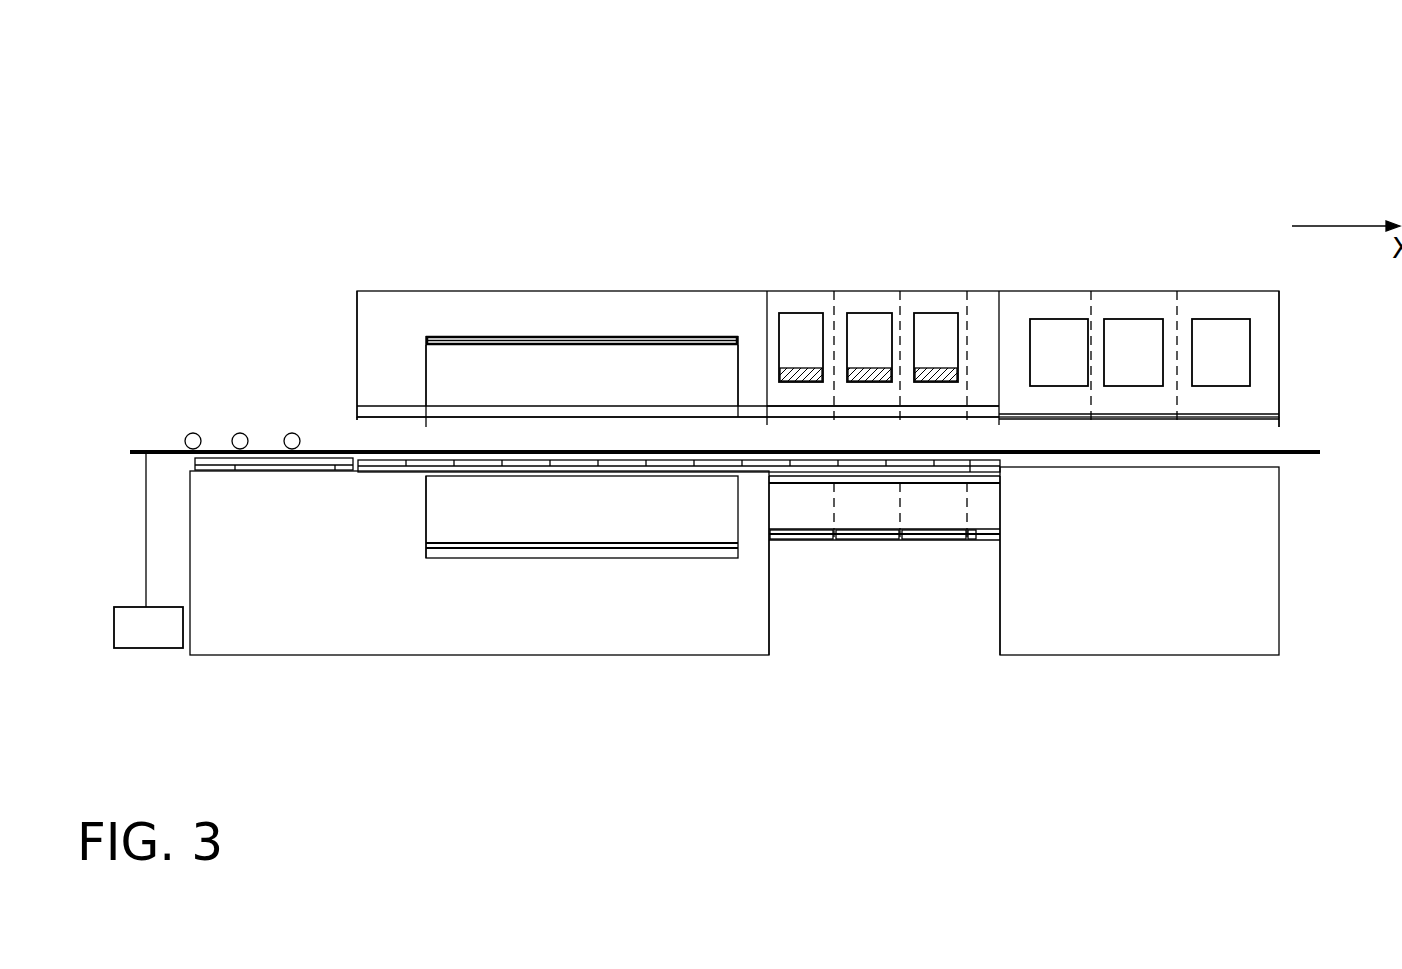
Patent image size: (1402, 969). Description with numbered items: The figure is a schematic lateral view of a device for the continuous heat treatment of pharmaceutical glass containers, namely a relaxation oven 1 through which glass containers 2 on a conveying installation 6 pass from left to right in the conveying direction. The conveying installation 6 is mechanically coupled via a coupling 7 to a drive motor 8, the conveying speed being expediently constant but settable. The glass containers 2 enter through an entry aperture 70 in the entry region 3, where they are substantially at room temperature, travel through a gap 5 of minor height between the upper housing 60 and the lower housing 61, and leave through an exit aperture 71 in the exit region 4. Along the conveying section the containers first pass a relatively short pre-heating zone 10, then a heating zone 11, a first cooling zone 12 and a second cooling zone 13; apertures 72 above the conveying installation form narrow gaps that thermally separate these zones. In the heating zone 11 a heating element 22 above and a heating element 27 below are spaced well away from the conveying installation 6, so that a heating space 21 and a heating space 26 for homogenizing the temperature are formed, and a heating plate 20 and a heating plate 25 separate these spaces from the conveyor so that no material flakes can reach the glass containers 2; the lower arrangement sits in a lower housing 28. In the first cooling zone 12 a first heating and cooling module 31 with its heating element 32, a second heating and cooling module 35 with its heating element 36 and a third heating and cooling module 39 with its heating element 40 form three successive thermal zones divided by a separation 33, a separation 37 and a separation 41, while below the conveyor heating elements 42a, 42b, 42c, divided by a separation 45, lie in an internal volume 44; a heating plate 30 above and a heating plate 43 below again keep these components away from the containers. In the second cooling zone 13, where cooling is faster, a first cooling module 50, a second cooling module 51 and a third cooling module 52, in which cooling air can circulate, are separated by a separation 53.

The relaxation oven 1 is at (256, 111).
The glass container 2 is at (193, 432).
The entry region 3 is at (345, 437).
The exit region 4 is at (1290, 437).
The gap 5 is at (605, 430).
The conveying installation 6 is at (140, 451).
The coupling 7 is at (145, 536).
The drive motor 8 is at (113, 628).
The pre-heating zone 10 is at (393, 408).
The heating zone 11 is at (619, 175).
The first cooling zone 12 is at (901, 266).
The second cooling zone 13 is at (1139, 265).
The heating plate 20 is at (582, 326).
The heating space 21 is at (492, 366).
The heating element 22 is at (444, 338).
The heating plate 25 is at (690, 478).
The heating space 26 is at (582, 592).
The heating element 27 is at (563, 553).
The lower housing 28 is at (426, 508).
The heating plate 30 is at (984, 415).
The first heating and cooling module 31 is at (801, 280).
The heating element 32 is at (802, 372).
The separation 33 is at (834, 302).
The second heating and cooling module 35 is at (879, 283).
The heating element 36 is at (885, 372).
The separation 37 is at (897, 302).
The third heating and cooling module 39 is at (949, 274).
The heating element 40 is at (950, 372).
The separation 41 is at (967, 302).
The heating element 42a is at (808, 540).
The heating element 42b is at (862, 540).
The heating element 42c is at (947, 540).
The heating plate 43 is at (910, 470).
The internal volume 44 is at (786, 522).
The separation 45 is at (830, 488).
The first cooling module 50 is at (1068, 335).
The second cooling module 51 is at (1148, 335).
The third cooling module 52 is at (1235, 335).
The separation 53 is at (1091, 310).
The housing 60 is at (737, 298).
The housing 61 is at (303, 643).
The entry aperture 70 is at (352, 420).
The exit aperture 71 is at (1283, 418).
The aperture 72 is at (767, 418).